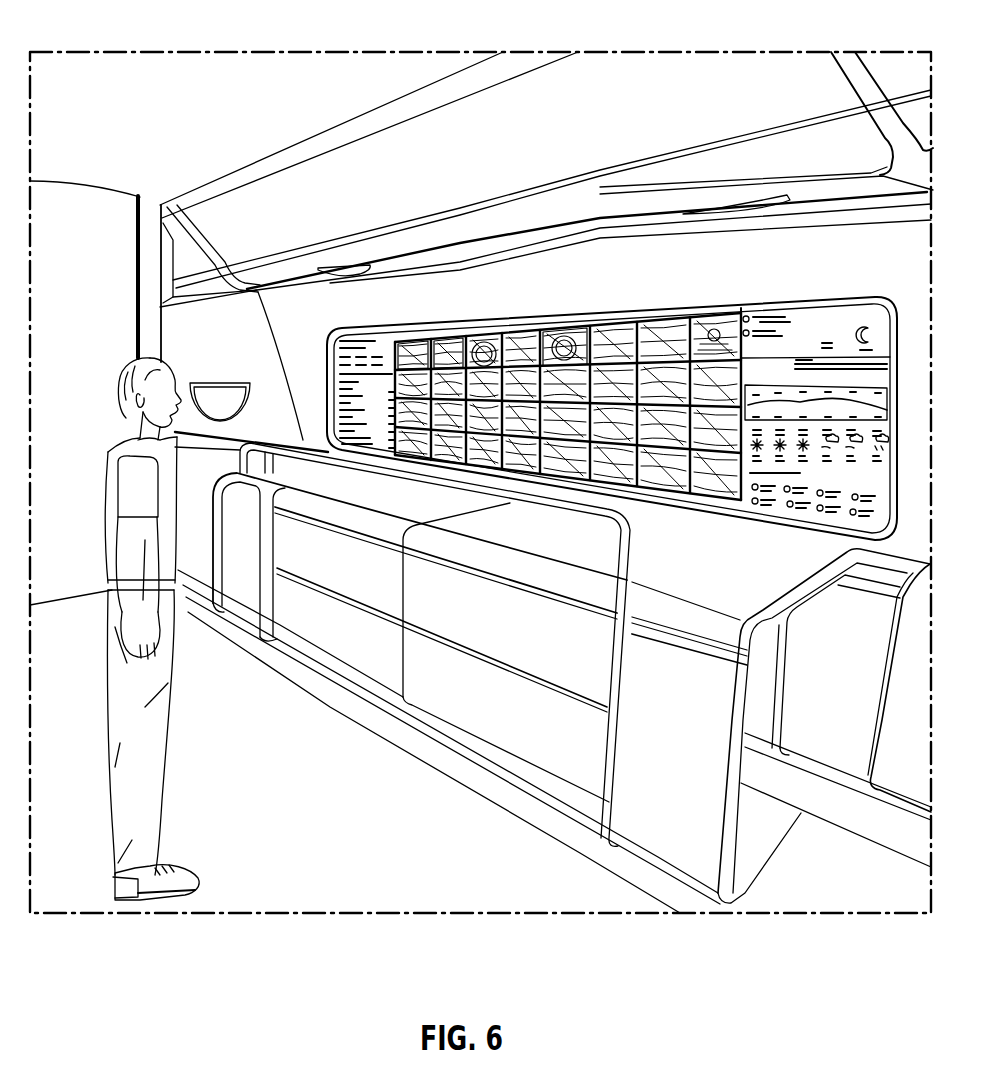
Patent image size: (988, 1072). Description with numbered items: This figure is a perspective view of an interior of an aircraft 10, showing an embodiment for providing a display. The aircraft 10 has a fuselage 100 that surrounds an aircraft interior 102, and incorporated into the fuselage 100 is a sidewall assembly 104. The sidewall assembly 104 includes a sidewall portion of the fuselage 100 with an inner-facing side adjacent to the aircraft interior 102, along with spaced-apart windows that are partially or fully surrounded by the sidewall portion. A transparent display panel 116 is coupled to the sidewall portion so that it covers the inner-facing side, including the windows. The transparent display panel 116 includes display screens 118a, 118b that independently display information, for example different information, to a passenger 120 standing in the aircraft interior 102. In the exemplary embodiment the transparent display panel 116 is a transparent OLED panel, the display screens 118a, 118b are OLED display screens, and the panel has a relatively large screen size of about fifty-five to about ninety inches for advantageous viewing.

The fuselage 100 is at (778, 52).
The aircraft 10 is at (397, 100).
The aircraft interior 102 is at (257, 714).
The sidewall assembly 104 is at (751, 291).
The transparent display panel 116 is at (573, 327).
The display screen 118a is at (400, 342).
The display screen 118b is at (452, 338).
The passenger 120 is at (113, 686).